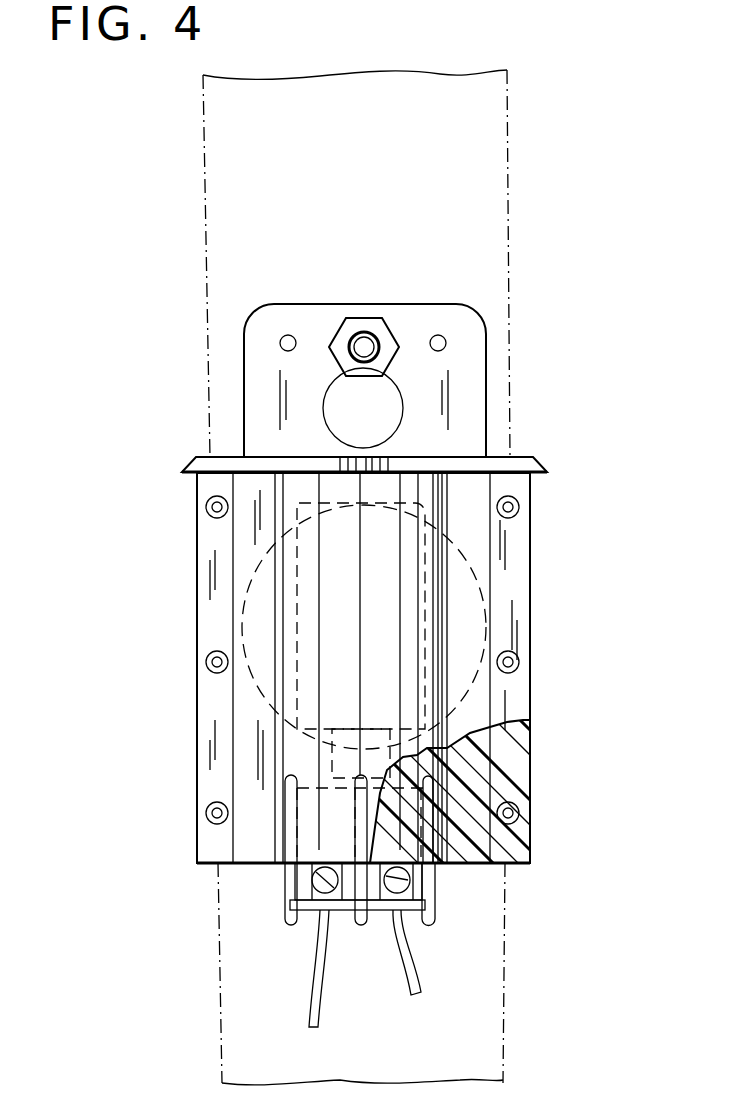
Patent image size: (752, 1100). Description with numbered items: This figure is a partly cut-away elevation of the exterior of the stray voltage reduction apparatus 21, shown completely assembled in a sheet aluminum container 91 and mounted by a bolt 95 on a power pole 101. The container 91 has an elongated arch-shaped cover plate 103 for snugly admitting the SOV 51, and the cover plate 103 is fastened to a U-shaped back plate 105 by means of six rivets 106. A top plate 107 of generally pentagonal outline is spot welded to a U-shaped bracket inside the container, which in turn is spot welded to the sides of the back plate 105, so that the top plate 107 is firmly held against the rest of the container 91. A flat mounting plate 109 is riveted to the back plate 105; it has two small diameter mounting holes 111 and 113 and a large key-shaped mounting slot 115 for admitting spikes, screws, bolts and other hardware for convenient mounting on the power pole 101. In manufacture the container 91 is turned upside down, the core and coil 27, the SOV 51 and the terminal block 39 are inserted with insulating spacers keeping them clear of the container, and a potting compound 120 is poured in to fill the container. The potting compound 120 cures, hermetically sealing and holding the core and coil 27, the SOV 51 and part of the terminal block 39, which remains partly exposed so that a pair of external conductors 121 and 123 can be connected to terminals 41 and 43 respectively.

The power pole 101 is at (470, 213).
The bolt 95 is at (366, 340).
The mounting hole 113 is at (280, 343).
The mounting hole 111 is at (446, 342).
The mounting plate 109 is at (480, 388).
The key-shaped mounting slot 115 is at (398, 422).
The top plate 107 is at (512, 467).
The sheet aluminum container 91 is at (198, 578).
The cover plate 103 is at (433, 514).
The core and coil 27 is at (470, 562).
The SOV 51 is at (425, 622).
The back plate 105 is at (210, 630).
The rivets 106 is at (208, 668).
The potting compound 120 is at (497, 793).
The stray voltage reduction apparatus 21 is at (465, 880).
The terminal block 39 is at (287, 888).
The terminal 43 is at (318, 902).
The terminal 41 is at (400, 903).
The external conductor 123 is at (308, 1000).
The external conductor 121 is at (405, 990).